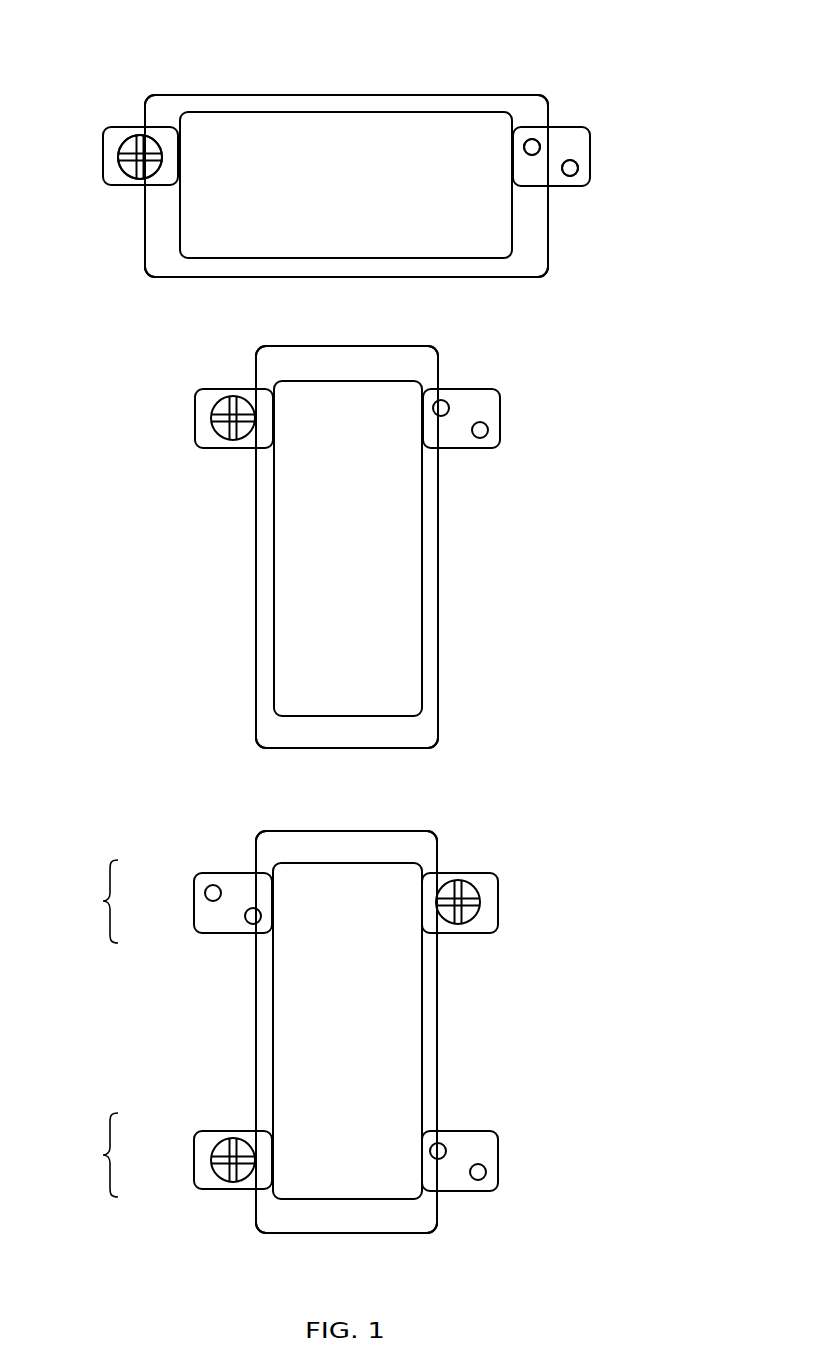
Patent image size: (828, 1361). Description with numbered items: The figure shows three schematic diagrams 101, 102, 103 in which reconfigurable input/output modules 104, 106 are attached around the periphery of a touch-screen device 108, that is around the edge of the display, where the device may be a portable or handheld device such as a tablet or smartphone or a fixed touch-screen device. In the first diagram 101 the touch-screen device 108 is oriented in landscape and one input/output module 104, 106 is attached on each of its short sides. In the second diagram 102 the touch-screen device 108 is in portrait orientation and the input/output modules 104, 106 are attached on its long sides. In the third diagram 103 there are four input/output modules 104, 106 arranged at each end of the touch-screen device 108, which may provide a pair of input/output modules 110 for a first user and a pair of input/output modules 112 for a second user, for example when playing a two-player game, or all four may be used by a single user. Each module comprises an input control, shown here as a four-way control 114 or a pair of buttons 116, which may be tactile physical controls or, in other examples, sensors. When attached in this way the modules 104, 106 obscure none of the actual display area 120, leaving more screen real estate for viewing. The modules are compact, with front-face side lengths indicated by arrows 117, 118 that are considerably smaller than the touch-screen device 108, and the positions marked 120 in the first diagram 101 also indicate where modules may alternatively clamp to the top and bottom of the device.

The first diagram 101 is at (626, 126).
The second diagram 102 is at (633, 456).
The third diagram 103 is at (656, 944).
The input/output module 104 is at (113, 176).
The input/output module 106 is at (590, 176).
The touch-screen device 108 is at (344, 93).
The pair of input/output modules 110 is at (83, 901).
The pair of input/output modules 112 is at (84, 1155).
The four-way control 114 is at (126, 142).
The buttons 116 is at (570, 160).
The arrow 117 is at (498, 379).
The arrow 118 is at (523, 392).
The display area 120 is at (367, 198).